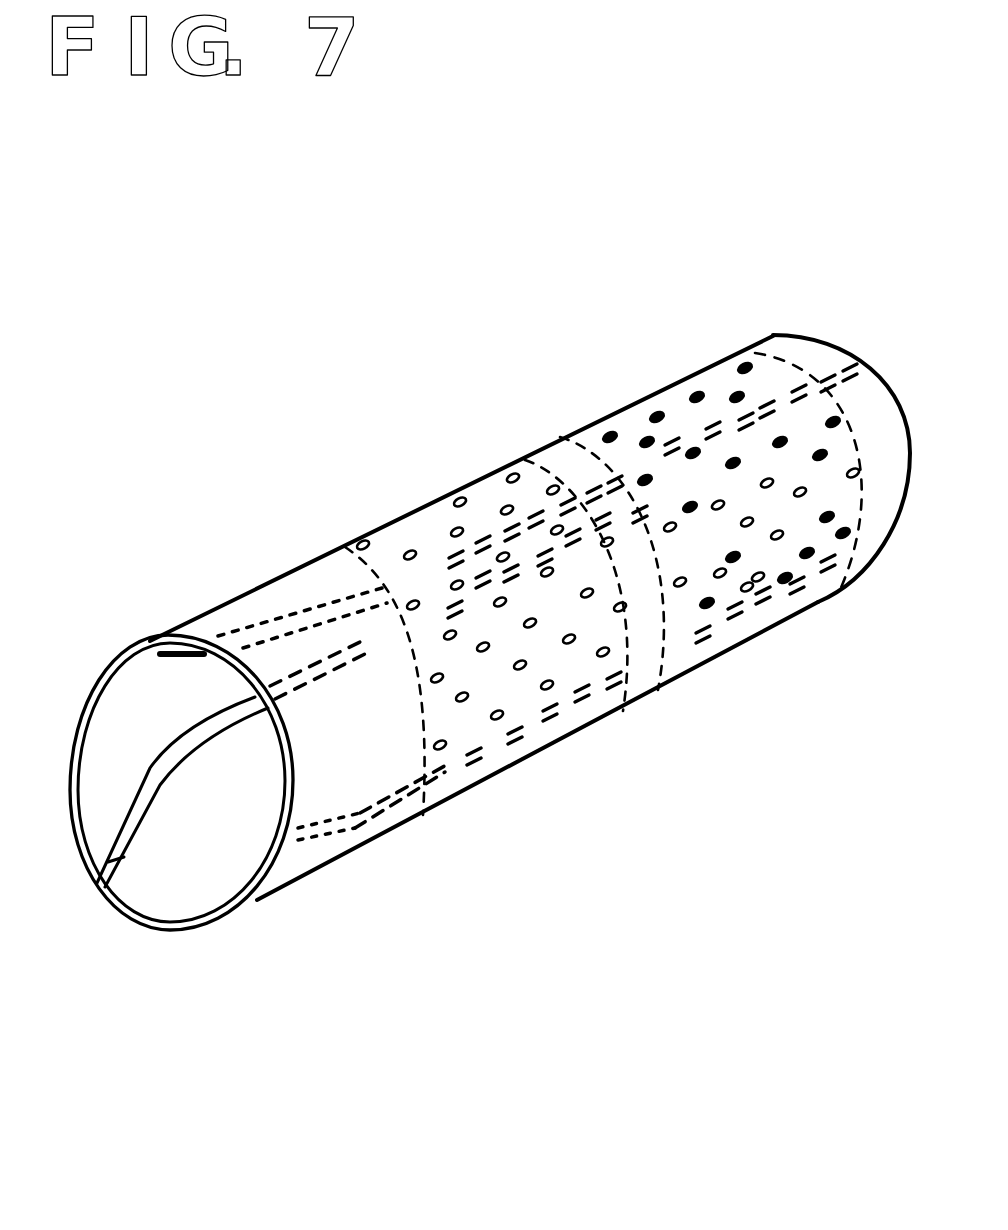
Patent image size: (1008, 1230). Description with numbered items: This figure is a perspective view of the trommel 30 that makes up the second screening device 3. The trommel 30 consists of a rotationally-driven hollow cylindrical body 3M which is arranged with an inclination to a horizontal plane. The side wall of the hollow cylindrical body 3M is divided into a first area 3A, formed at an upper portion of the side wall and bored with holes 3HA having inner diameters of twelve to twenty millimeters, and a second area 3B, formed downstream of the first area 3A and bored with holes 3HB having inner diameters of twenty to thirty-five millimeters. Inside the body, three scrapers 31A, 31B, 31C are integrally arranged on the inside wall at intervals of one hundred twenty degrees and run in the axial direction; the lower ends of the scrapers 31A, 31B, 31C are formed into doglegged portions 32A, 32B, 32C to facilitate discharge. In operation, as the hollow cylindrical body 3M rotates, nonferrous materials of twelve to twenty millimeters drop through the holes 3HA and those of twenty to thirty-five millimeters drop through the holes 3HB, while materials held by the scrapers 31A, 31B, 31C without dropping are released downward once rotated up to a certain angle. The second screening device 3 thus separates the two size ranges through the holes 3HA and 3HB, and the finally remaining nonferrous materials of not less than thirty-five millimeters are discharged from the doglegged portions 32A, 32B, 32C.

The second screening device 3 is at (722, 762).
The trommel 30 is at (655, 690).
The first area 3A is at (678, 425).
The second area 3B is at (447, 597).
The holes 3HA is at (820, 456).
The holes 3HB is at (587, 595).
The hollow cylindrical body 3M is at (363, 735).
The scraper 31A is at (472, 752).
The scraper 31B is at (343, 545).
The scraper 31C is at (407, 523).
The doglegged portion 32A is at (270, 835).
The doglegged portion 32B is at (160, 646).
The doglegged portion 32C is at (115, 860).